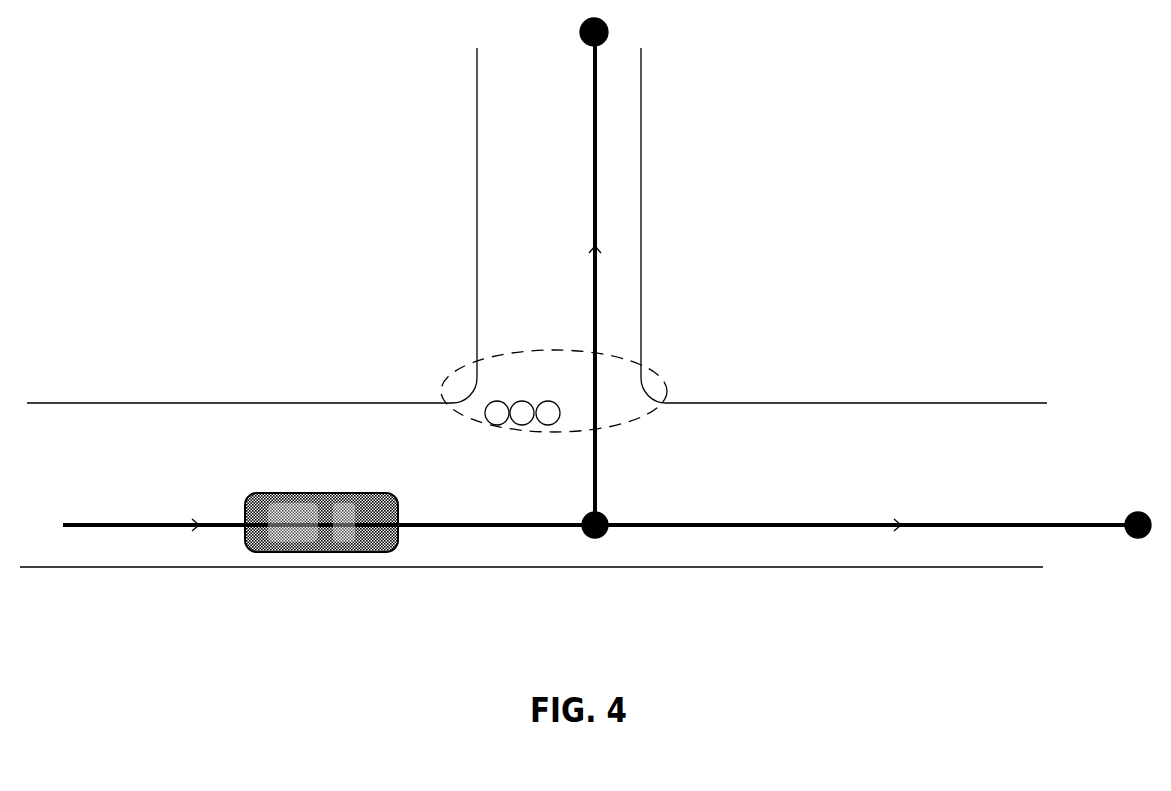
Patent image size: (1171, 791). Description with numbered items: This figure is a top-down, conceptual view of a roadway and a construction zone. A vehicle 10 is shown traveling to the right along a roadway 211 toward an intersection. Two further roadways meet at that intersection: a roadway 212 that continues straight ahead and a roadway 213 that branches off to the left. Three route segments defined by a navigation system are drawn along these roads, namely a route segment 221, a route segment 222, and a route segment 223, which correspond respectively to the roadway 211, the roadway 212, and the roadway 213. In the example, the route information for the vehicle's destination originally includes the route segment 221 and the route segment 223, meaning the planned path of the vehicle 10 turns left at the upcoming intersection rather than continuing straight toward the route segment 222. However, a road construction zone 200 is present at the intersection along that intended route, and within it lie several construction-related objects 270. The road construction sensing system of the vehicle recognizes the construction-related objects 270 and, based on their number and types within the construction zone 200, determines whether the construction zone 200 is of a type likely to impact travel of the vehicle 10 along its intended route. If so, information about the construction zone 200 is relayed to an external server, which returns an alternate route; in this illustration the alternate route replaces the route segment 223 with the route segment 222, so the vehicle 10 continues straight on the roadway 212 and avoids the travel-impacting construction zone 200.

The vehicle 10 is at (247, 507).
The road construction zone 200 is at (567, 390).
The roadway 211 is at (335, 465).
The roadway 212 is at (856, 466).
The roadway 213 is at (571, 176).
The route segment 221 is at (463, 527).
The route segment 222 is at (773, 527).
The route segment 223 is at (595, 218).
The construction-related objects 270 is at (497, 425).